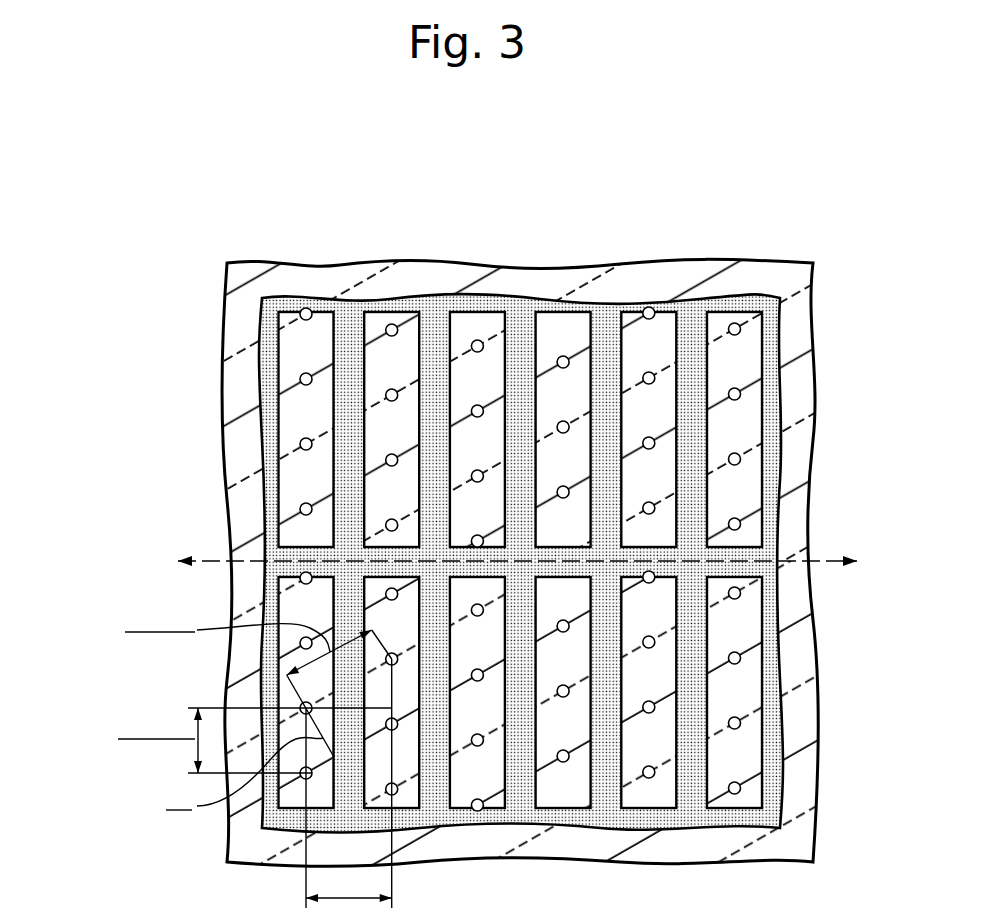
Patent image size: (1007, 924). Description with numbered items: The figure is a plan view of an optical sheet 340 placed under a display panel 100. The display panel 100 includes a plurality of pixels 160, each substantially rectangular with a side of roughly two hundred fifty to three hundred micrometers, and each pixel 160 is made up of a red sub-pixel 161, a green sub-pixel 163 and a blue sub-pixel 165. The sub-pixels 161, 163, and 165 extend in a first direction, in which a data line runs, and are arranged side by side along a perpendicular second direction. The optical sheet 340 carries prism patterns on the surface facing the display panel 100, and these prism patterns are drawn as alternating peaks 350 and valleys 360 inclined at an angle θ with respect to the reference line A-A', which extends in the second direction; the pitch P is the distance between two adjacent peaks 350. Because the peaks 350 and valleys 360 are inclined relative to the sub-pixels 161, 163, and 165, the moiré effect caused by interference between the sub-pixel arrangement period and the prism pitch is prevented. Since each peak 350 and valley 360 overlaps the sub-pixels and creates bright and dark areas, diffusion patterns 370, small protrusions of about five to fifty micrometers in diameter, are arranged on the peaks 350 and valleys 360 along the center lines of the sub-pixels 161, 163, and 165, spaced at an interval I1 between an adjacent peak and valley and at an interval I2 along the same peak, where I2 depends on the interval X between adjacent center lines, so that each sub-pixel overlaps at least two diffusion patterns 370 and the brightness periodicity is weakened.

The display panel 100 is at (474, 536).
The pixel 160 is at (521, 486).
The red sub-pixel 161 is at (316, 311).
The green sub-pixel 163 is at (395, 311).
The blue sub-pixel 165 is at (606, 503).
The optical sheet 340 is at (810, 257).
The peak 350 is at (712, 297).
The valley 360 is at (598, 278).
The diffusion pattern 370 is at (563, 358).